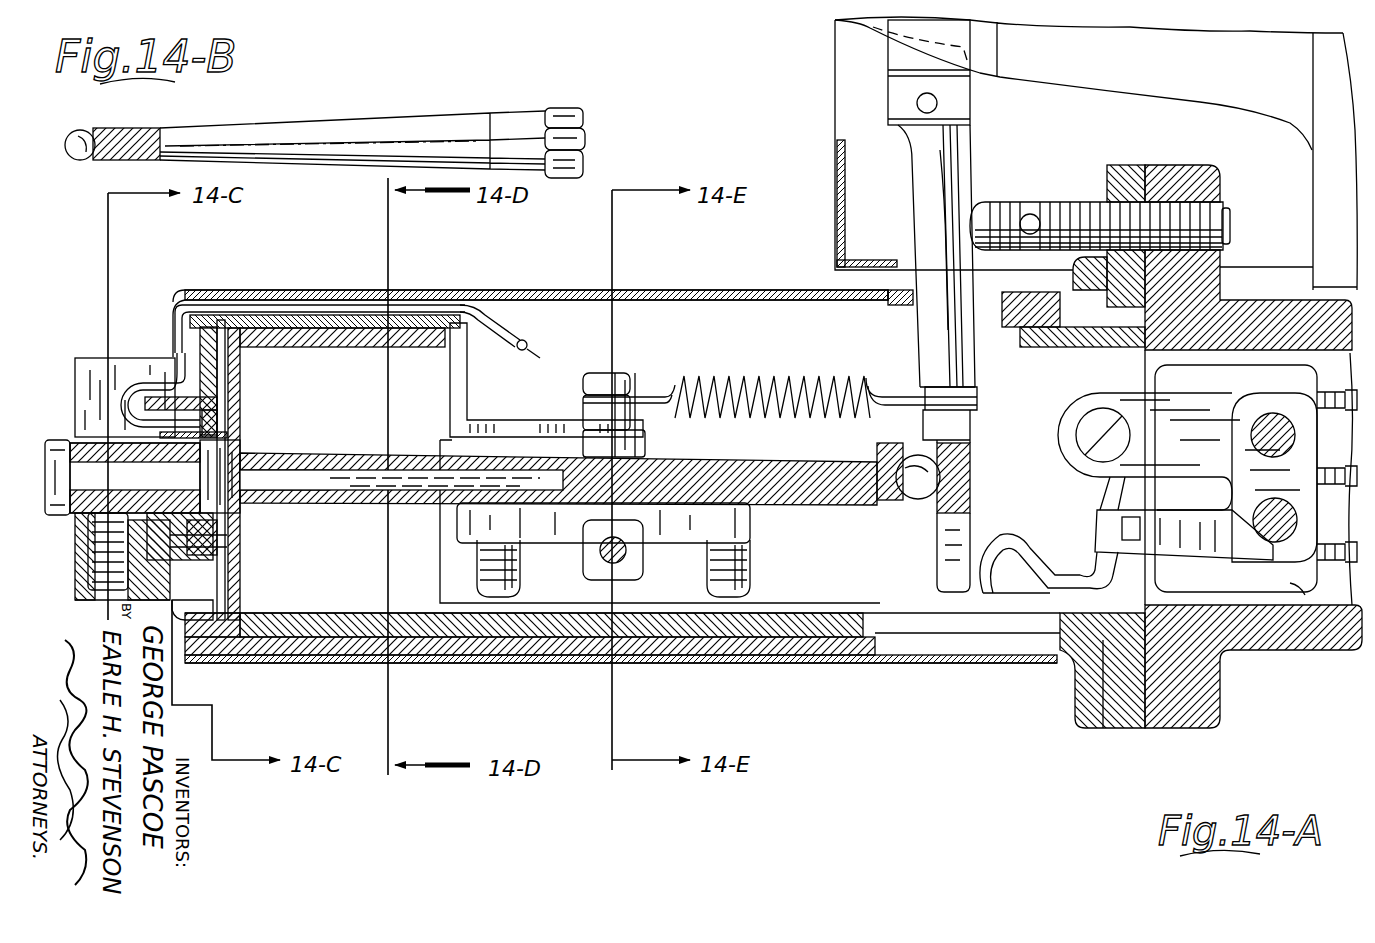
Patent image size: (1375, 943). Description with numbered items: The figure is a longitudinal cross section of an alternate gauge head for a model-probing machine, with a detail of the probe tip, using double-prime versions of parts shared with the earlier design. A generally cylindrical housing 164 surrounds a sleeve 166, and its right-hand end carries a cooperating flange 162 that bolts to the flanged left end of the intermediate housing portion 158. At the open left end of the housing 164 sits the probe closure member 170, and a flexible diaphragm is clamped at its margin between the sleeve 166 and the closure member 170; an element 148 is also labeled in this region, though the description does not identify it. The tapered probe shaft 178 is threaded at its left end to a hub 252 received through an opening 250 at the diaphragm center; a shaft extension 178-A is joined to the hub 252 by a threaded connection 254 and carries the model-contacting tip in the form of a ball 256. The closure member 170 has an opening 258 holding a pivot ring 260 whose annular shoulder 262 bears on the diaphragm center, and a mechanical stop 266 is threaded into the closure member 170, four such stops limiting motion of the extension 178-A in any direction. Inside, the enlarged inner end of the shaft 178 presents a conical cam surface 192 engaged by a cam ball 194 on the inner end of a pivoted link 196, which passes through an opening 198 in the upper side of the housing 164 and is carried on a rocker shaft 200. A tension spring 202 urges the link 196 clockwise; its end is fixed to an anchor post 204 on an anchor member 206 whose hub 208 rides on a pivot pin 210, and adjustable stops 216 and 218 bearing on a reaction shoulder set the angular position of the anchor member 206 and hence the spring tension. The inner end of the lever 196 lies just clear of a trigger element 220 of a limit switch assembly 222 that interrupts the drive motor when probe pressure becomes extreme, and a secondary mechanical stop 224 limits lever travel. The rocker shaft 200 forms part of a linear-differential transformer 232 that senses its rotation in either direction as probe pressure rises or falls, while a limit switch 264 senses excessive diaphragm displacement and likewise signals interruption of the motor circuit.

In FIG. 14A, the partition plate 148 is at (250, 373).
In FIG. 14A, the intermediate housing portion 158 is at (1167, 720).
In FIG. 14A, the cooperating flange 162 is at (1080, 713).
In FIG. 14A, the housing 164 is at (430, 640).
In FIG. 14A, the sleeve 166 is at (330, 625).
In FIG. 14A, the probe closure member 170 is at (243, 587).
In FIG. 14A, the probe shaft 178 is at (407, 453).
In FIG. 14B, the shaft extension 178-A is at (400, 98).
In FIG. 14A, the conical cam surface 192 is at (900, 485).
In FIG. 14A, the cam ball 194 is at (917, 507).
In FIG. 14A, the pivoted link 196 is at (915, 162).
In FIG. 14A, the opening 198 is at (1000, 313).
In FIG. 14A, the rocker shaft 200 is at (832, 36).
In FIG. 14A, the tension spring 202 is at (720, 375).
In FIG. 14A, the anchor post 204 is at (622, 377).
In FIG. 14A, the anchor member 206 is at (640, 580).
In FIG. 14A, the hub 208 is at (580, 610).
In FIG. 14A, the pivot pin 210 is at (613, 563).
In FIG. 14A, the adjustable stop 216 is at (508, 605).
In FIG. 14A, the adjustable stop 218 is at (690, 525).
In FIG. 14A, the trigger element 220 is at (1010, 590).
In FIG. 14A, the limit switch assembly 222 is at (1295, 600).
In FIG. 14A, the secondary mechanical stop 224 is at (1070, 202).
In FIG. 14A, the linear-differential transformer 232 is at (1300, 139).
In FIG. 14A, the opening 250 is at (245, 462).
In FIG. 14A, the hub 252 is at (262, 450).
In FIG. 14B, the threaded connection 254 is at (580, 133).
In FIG. 14A, the threaded connection 254 is at (57, 425).
In FIG. 14B, the ball 256 is at (85, 130).
In FIG. 14A, the opening 258 is at (238, 567).
In FIG. 14A, the pivot ring 260 is at (240, 547).
In FIG. 14A, the annular shoulder 262 is at (243, 527).
In FIG. 14A, the limit switch 264 is at (305, 268).
In FIG. 14A, the mechanical stop 266 is at (113, 520).